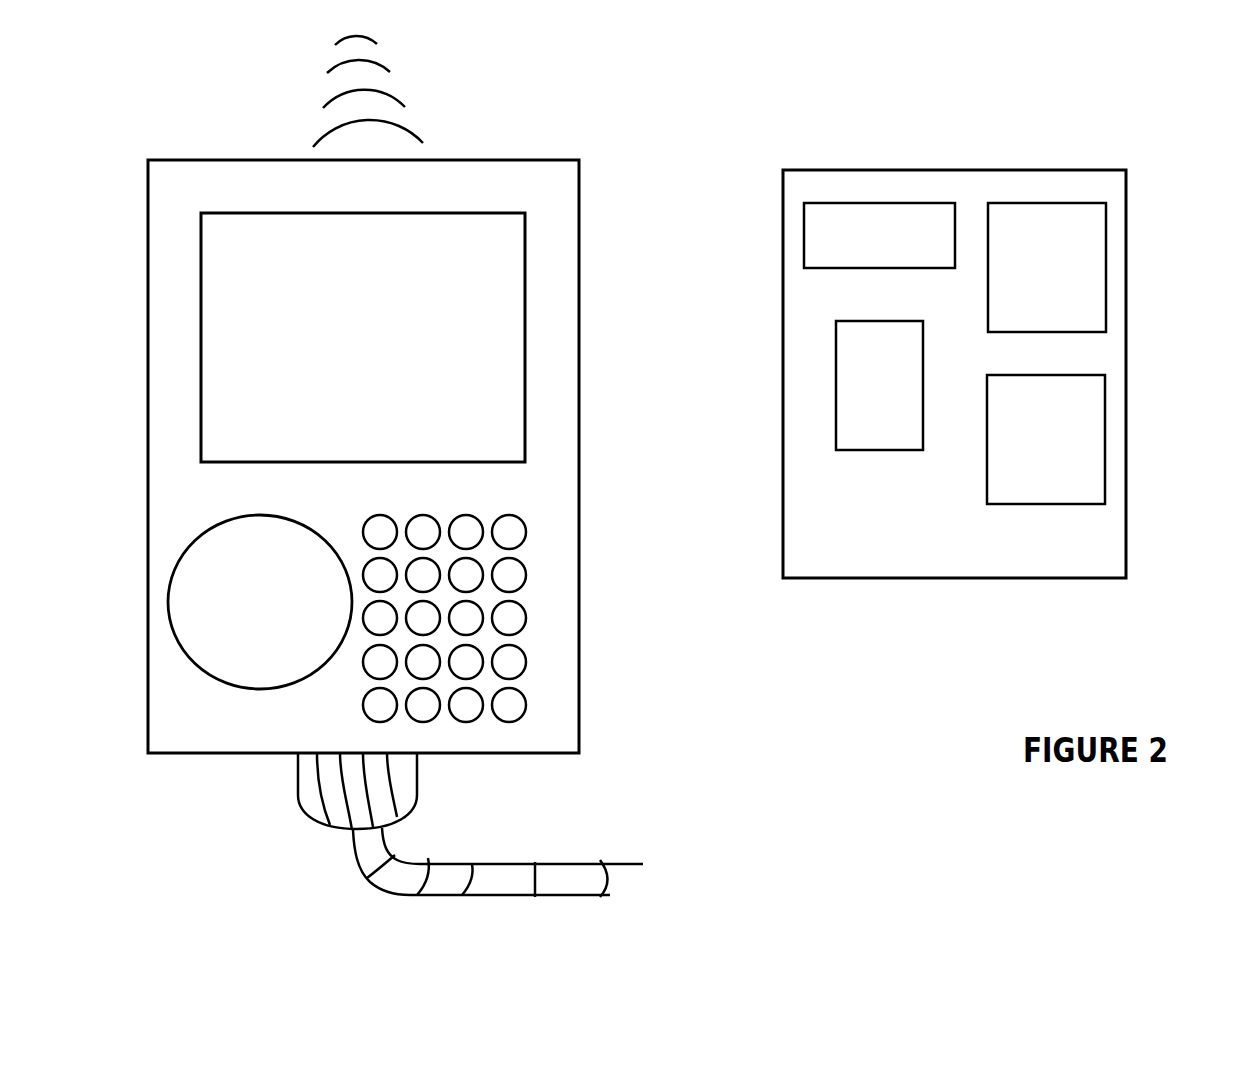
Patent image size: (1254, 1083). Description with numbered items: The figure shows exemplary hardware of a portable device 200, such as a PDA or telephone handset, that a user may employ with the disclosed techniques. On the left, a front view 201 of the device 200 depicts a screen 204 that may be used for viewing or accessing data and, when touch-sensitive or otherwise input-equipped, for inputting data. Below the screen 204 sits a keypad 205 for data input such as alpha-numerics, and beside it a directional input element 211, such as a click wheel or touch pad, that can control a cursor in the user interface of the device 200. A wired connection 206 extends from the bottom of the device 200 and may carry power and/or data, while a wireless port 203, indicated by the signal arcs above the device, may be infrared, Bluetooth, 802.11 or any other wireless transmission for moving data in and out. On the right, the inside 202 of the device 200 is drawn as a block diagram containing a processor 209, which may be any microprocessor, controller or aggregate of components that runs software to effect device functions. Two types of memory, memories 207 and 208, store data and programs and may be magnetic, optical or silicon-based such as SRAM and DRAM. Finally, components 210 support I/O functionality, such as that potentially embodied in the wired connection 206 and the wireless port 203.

The device 200 is at (687, 128).
The front view 201 is at (257, 160).
The inside 202 is at (1062, 172).
The wireless port 203 is at (407, 84).
The screen 204 is at (525, 245).
The keypad 205 is at (522, 578).
The wired connection 206 is at (417, 797).
The memory 207 is at (1107, 268).
The memory 208 is at (1105, 408).
The processor 209 is at (803, 238).
The components to support I/O functionality 210 is at (835, 365).
The directional input element 211 is at (217, 655).